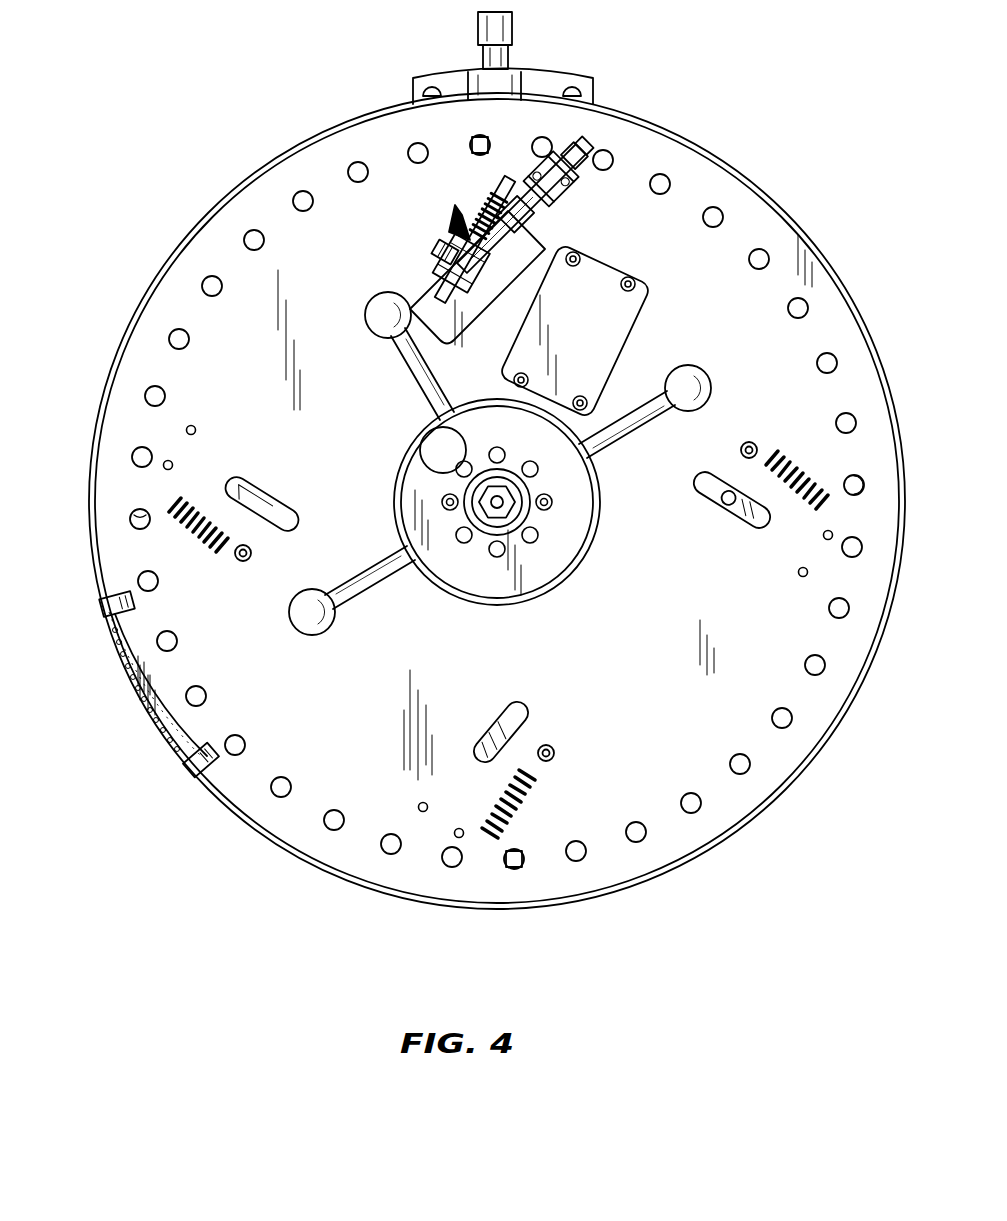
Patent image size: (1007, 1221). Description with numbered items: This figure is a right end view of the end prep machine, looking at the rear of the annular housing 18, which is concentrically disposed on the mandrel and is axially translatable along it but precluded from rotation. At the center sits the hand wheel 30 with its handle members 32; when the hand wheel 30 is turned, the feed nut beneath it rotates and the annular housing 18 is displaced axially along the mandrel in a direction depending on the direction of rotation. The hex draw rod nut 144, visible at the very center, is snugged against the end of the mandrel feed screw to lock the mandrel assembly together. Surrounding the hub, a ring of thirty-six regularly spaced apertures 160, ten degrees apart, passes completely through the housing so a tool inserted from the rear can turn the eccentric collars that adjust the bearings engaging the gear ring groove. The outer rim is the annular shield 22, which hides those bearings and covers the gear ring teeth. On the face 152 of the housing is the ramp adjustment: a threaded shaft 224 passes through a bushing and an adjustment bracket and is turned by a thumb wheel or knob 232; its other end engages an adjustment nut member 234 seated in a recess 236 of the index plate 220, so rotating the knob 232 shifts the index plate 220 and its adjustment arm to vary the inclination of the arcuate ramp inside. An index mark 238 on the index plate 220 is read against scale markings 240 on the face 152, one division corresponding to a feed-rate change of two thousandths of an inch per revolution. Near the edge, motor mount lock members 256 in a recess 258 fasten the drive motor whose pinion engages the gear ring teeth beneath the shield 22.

The annular housing 18 is at (720, 345).
The annular shield 22 is at (714, 152).
The hand wheel 30 is at (573, 546).
The handle members 32 is at (712, 376).
The hex draw rod nut 144 is at (513, 493).
The opposed face 152 is at (664, 604).
The apertures 160 is at (246, 741).
The index plate 220 is at (458, 333).
The threaded shaft 224 is at (537, 222).
The thumb wheel or knob 232 is at (560, 145).
The adjustment nut member 234 is at (437, 256).
The recess 236 is at (455, 292).
The index mark 238 is at (505, 192).
The scale markings 240 is at (456, 206).
The motor mount lock members 256 is at (113, 623).
The recess 258 is at (142, 697).